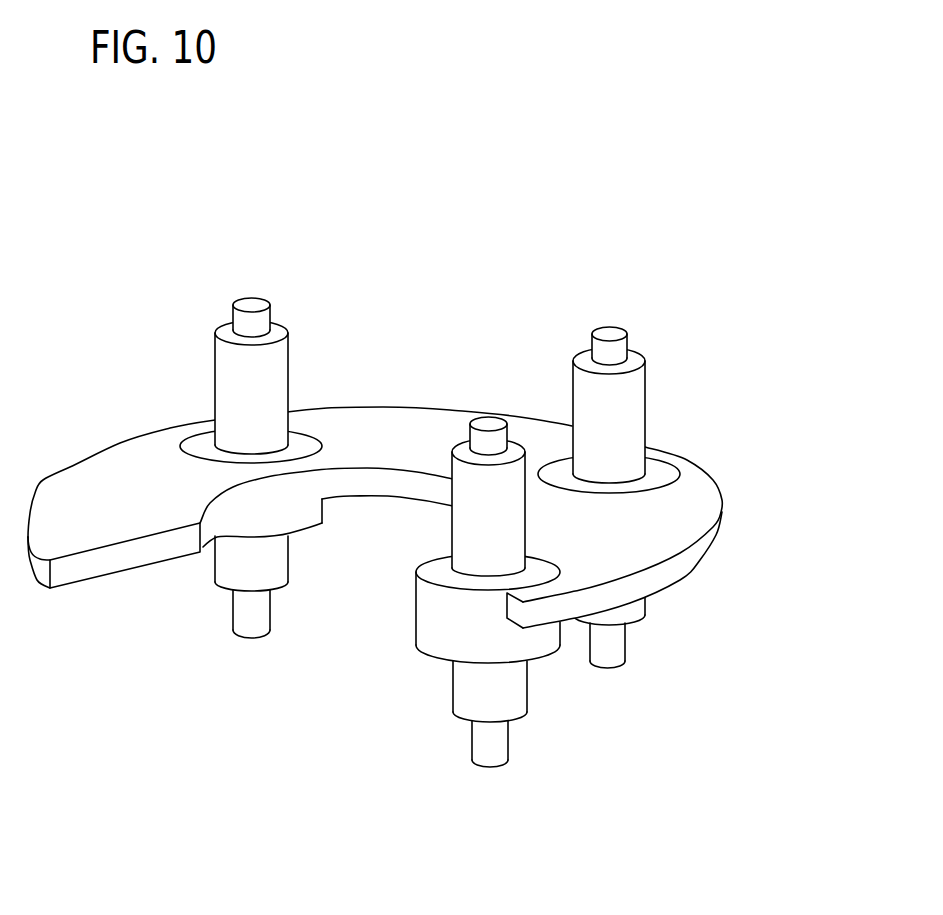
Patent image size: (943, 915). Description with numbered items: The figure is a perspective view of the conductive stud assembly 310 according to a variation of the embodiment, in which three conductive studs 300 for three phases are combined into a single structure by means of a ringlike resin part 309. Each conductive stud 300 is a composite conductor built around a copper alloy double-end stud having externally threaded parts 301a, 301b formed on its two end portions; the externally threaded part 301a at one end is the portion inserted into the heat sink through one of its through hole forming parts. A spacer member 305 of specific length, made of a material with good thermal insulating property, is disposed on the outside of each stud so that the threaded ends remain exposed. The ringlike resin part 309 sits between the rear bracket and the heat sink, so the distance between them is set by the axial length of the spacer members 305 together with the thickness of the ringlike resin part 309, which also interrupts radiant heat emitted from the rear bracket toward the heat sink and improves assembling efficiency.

The conductive stud assembly 310 is at (393, 167).
The conductive stud 300 is at (511, 532).
The externally threaded part 301a is at (607, 333).
The externally threaded part 301b is at (470, 740).
The spacer member 305 is at (417, 603).
The ringlike resin part 309 is at (627, 552).